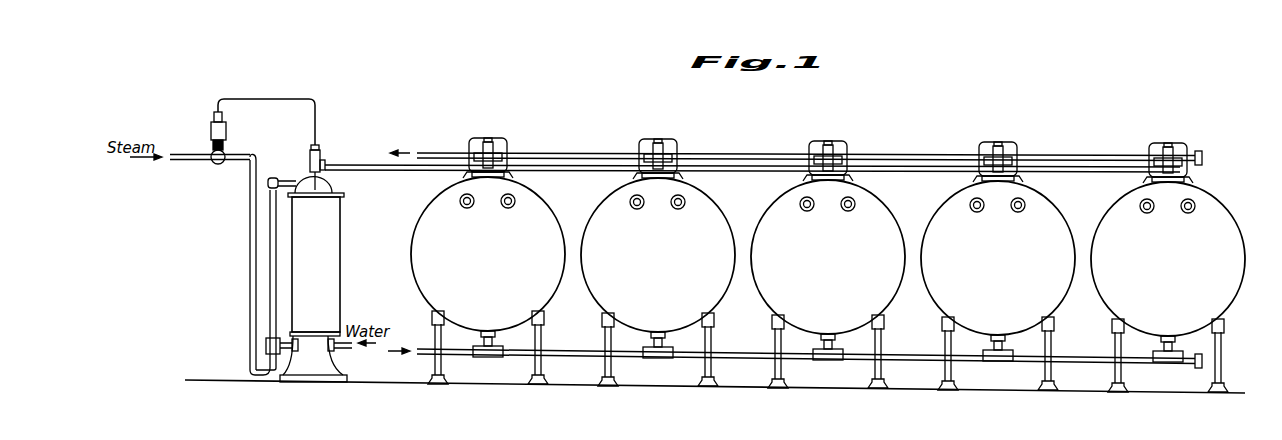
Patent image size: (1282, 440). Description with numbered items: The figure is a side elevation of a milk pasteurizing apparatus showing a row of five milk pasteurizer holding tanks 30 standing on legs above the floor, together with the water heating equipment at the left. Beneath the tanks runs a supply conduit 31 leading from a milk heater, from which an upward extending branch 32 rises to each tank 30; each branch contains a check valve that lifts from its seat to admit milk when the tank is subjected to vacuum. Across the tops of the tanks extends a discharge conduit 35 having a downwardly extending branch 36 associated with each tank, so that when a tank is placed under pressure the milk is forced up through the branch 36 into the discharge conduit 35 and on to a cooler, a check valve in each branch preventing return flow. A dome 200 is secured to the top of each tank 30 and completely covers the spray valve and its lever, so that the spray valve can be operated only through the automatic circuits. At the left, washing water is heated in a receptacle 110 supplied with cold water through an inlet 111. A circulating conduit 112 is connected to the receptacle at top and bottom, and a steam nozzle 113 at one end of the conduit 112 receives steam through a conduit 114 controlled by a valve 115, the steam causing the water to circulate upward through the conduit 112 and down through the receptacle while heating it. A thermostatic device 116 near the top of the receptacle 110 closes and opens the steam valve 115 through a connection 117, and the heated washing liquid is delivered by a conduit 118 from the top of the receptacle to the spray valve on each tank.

The milk pasteurizer holding tank 30 is at (423, 280).
The supply conduit 31 is at (574, 354).
The upward extending branch 32 is at (494, 343).
The discharge conduit 35 is at (927, 159).
The downwardly extending branch 36 is at (512, 175).
The receptacle 110 is at (340, 259).
The inlet 111 is at (345, 352).
The circulating conduit 112 is at (270, 257).
The steam nozzle 113 is at (266, 345).
The conduit 114 is at (252, 297).
The valve 115 is at (228, 150).
The thermostatic device 116 is at (328, 166).
The connection 117 is at (277, 100).
The conduit 118 is at (406, 171).
The dome 200 is at (507, 140).